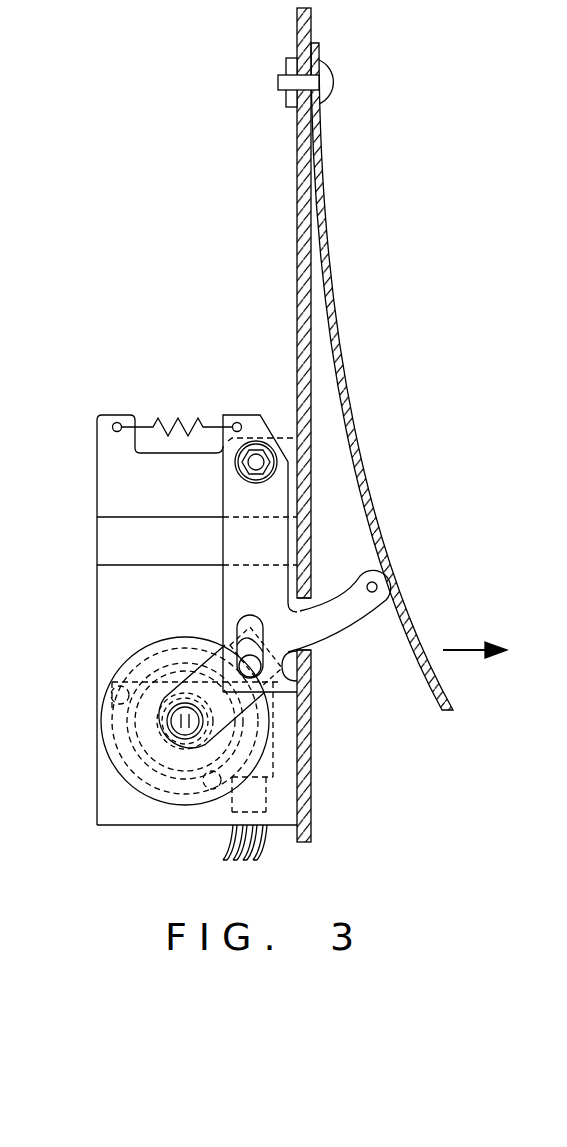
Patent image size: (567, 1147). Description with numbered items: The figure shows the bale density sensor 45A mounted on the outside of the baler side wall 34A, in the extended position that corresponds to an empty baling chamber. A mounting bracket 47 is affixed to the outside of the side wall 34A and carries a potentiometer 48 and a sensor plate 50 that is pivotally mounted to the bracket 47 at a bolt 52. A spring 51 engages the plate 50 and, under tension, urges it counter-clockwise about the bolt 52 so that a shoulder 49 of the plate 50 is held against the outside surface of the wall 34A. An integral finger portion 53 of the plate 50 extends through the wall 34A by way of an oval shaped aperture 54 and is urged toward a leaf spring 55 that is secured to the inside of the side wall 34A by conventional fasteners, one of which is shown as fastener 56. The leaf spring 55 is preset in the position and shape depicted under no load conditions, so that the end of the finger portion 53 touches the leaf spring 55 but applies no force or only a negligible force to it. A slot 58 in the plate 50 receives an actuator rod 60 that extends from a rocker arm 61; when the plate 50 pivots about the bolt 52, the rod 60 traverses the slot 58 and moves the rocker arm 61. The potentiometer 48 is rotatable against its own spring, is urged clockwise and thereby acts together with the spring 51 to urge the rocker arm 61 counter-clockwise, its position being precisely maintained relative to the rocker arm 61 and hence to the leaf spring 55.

The side wall 34A is at (297, 173).
The sensor 45A is at (100, 384).
The mounting bracket 47 is at (97, 488).
The potentiometer 48 is at (173, 796).
The shoulder 49 is at (298, 689).
The sensor plate 50 is at (222, 477).
The spring 51 is at (175, 418).
The bolt 52 is at (256, 460).
The finger portion 53 is at (336, 627).
The oval shaped aperture 54 is at (312, 598).
The leaf spring 55 is at (345, 386).
The bolt 56 is at (335, 80).
The slot 58 is at (248, 614).
The actuator rod 60 is at (254, 670).
The rocker arm 61 is at (228, 727).